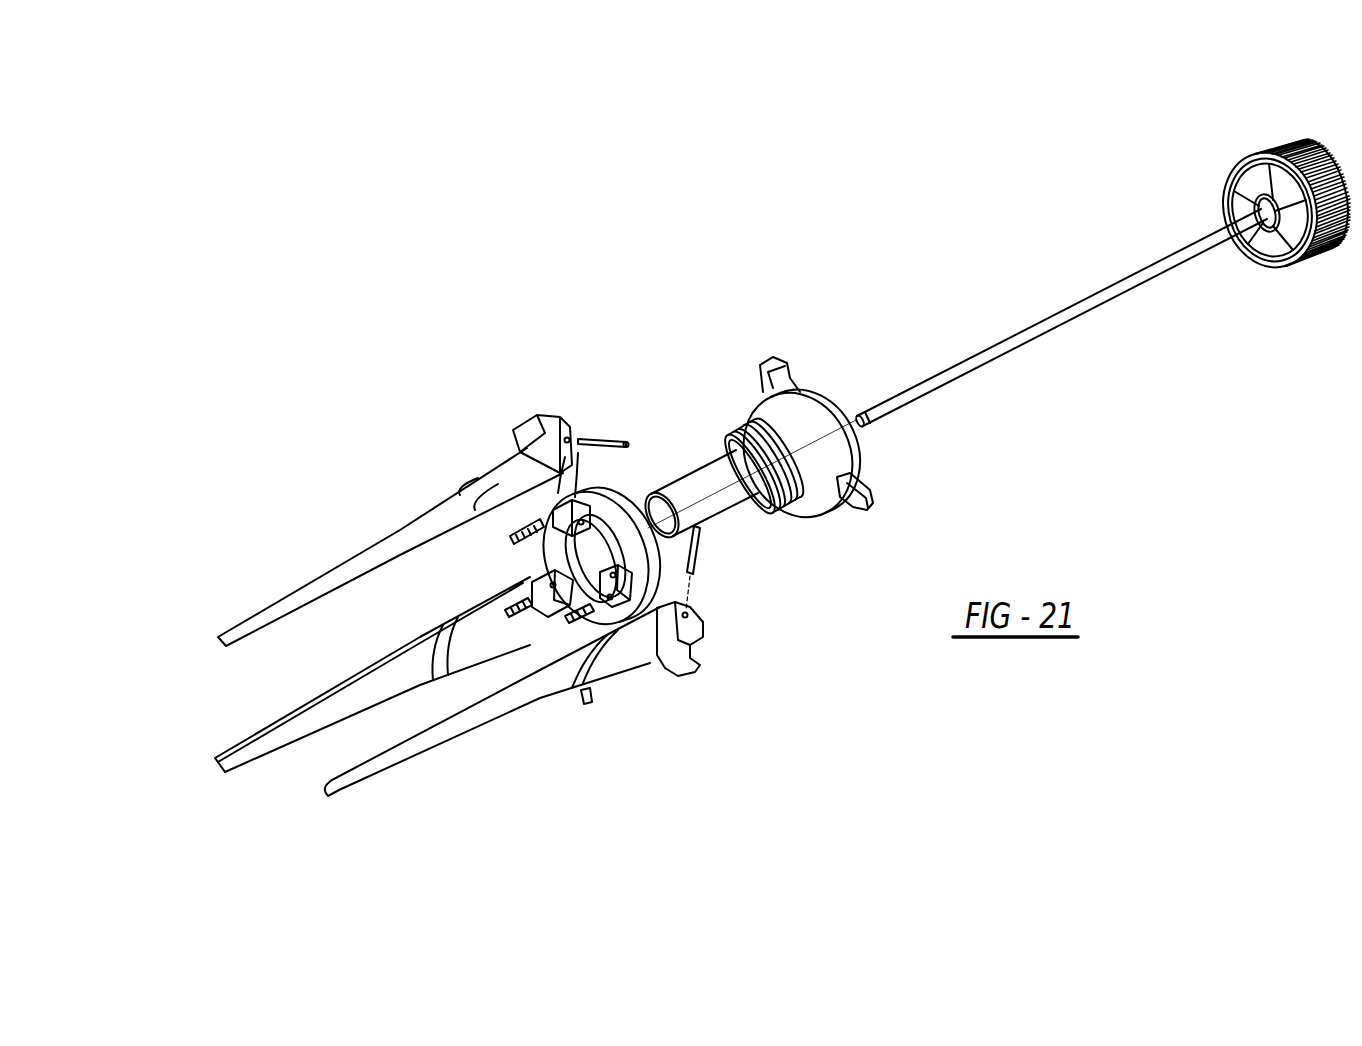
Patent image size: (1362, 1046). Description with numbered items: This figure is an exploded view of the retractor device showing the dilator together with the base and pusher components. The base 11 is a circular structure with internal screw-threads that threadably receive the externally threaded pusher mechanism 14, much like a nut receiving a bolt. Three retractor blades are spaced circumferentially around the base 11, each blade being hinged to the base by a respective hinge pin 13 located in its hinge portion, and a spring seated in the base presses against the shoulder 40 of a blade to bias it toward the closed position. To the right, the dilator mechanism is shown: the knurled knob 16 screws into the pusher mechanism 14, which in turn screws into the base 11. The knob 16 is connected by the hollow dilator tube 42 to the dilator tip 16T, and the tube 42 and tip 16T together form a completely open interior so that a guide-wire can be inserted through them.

The base 11 is at (624, 492).
The hinge pin 13 is at (614, 440).
The pusher mechanism 14 is at (823, 512).
The dilator mechanism knurled knob 16 is at (1292, 150).
The dilator mechanism tip 16T is at (853, 421).
The shoulder 40 is at (690, 480).
The dilator tube 42 is at (1050, 336).